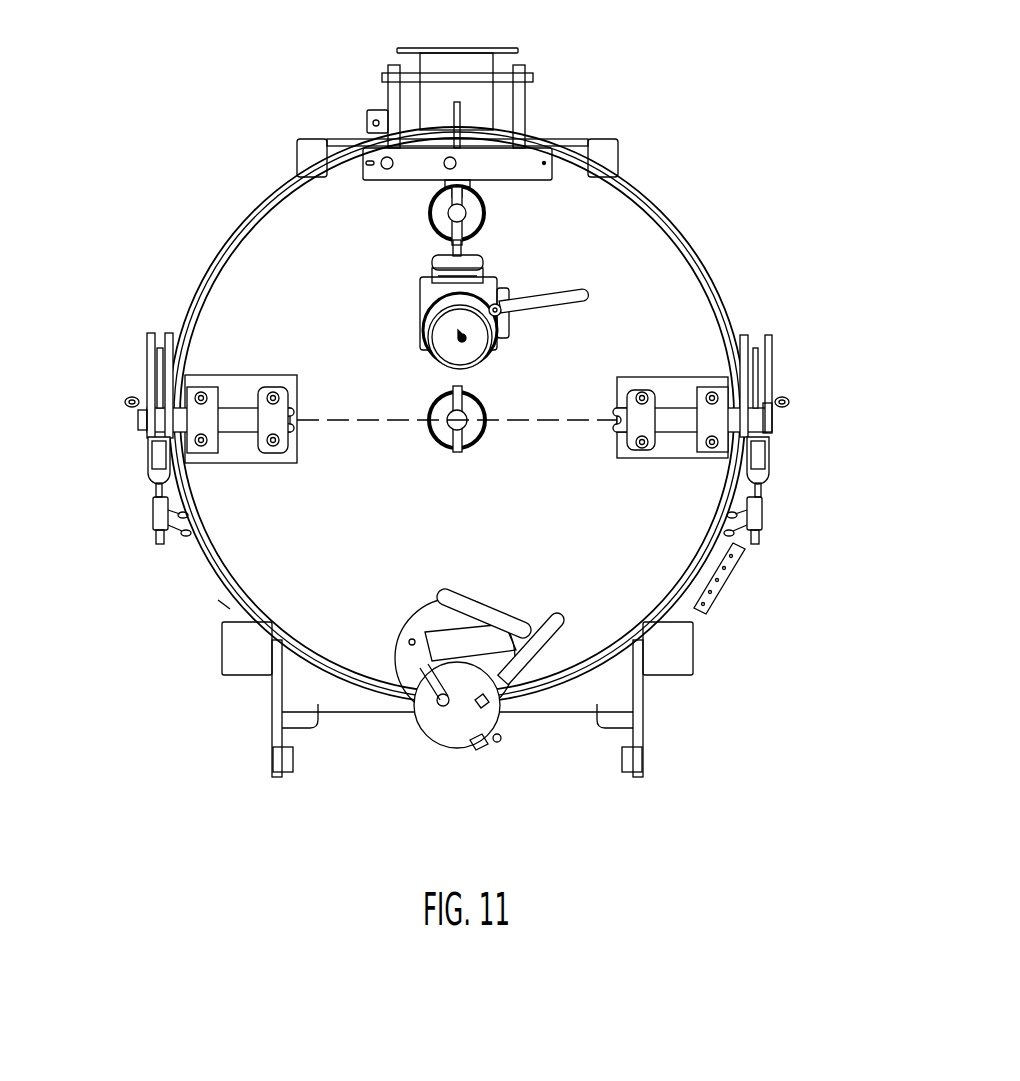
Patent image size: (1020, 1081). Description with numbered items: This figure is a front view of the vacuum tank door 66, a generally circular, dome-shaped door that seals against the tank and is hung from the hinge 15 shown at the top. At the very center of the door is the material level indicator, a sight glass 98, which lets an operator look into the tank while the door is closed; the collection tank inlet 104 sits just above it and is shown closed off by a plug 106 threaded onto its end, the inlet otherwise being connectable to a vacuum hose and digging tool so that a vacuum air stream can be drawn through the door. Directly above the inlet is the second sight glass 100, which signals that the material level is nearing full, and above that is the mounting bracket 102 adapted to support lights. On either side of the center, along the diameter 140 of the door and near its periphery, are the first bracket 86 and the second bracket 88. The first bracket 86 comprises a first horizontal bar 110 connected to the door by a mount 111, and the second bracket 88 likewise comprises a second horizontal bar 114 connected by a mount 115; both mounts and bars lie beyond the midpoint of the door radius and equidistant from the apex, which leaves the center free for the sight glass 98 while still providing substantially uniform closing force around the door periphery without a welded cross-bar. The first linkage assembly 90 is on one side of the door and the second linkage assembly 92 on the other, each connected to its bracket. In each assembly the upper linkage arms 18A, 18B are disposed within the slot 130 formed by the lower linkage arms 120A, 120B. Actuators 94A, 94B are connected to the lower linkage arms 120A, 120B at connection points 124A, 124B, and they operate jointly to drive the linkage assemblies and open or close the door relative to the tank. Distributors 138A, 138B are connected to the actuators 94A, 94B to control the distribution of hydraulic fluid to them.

The hinge 15 is at (457, 94).
The door 66 is at (457, 415).
The mounting bracket 102 is at (515, 149).
The second sight glass 100 is at (414, 215).
The inlet 104 is at (459, 303).
The plug 106 is at (501, 351).
The sight glass 98 is at (487, 435).
The diameter 140 is at (458, 448).
The first bracket 86 is at (208, 356).
The second bracket 88 is at (679, 439).
The first horizontal bar 110 is at (291, 447).
The mount 111 is at (227, 457).
The second horizontal bar 114 is at (650, 390).
The mount 115 is at (677, 460).
The slot 130 is at (458, 358).
The lower linkage arm 120A is at (97, 372).
The lower linkage arm 120B is at (821, 383).
The first linkage assembly 90 is at (107, 377).
The second linkage assembly 92 is at (809, 361).
The upper linkage arm 18A is at (111, 385).
The upper linkage arm 18B is at (803, 386).
The connection point 124A is at (104, 455).
The connection point 124B is at (812, 450).
The actuator 94A is at (102, 480).
The actuator 94B is at (816, 475).
The distributor 138A is at (119, 520).
The distributor 138B is at (801, 514).